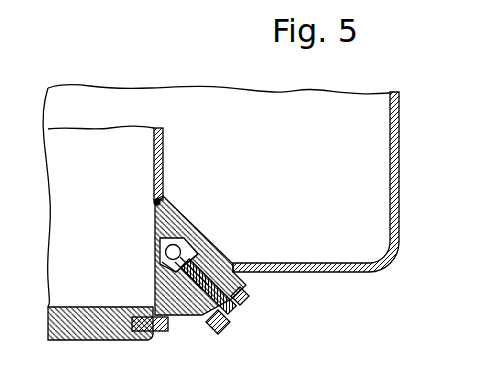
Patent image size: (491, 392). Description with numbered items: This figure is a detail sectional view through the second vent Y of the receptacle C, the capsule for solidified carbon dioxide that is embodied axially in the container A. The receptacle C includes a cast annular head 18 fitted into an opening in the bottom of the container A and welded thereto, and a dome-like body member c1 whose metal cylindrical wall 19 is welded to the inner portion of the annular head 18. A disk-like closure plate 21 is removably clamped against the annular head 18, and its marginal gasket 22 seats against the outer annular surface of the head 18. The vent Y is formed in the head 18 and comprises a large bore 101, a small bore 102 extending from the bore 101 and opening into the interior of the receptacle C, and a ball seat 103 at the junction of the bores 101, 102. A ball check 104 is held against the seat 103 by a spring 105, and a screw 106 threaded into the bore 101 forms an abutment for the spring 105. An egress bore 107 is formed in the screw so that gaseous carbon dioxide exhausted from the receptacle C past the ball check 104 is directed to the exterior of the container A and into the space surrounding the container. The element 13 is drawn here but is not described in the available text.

The bracket arm 13 is at (389, 115).
The cast annular head 18 is at (175, 212).
The cylindrical wall 19 is at (165, 133).
The closure plate 21 is at (80, 325).
The marginal gasket 22 is at (147, 331).
The large bore 101 is at (200, 238).
The small bore 102 is at (157, 233).
The ball seat 103 is at (157, 253).
The ball check 104 is at (178, 246).
The spring 105 is at (202, 260).
The screw 106 is at (201, 318).
The egress bore 107 is at (250, 296).
The receptacle C is at (167, 196).
The dome-like body member c1 is at (114, 129).
The container A is at (373, 275).
The second vent Y is at (236, 320).